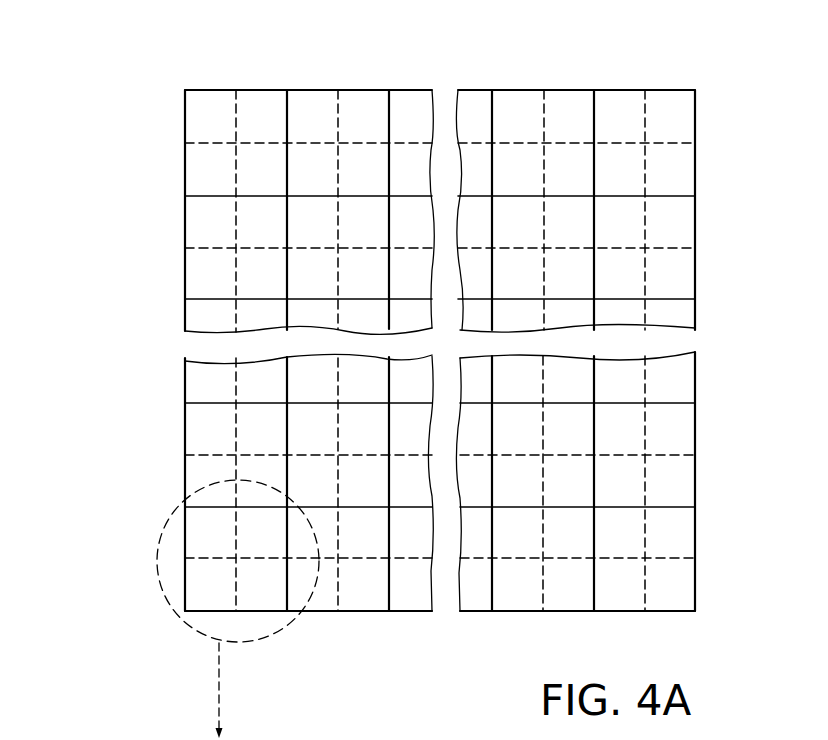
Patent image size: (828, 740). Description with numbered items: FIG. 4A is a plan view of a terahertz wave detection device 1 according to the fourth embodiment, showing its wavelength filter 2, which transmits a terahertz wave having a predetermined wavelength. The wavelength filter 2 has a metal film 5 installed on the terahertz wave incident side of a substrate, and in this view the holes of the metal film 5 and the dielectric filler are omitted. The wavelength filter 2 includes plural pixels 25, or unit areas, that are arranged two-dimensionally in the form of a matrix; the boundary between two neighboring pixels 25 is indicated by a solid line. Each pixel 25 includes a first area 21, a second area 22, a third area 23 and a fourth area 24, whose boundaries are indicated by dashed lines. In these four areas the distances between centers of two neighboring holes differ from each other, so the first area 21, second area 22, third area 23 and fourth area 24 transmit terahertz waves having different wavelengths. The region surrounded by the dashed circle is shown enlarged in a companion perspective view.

The terahertz wave detection device 1 is at (634, 67).
The wavelength filter 2 is at (165, 444).
The metal film 5 is at (203, 418).
The first area 21 is at (265, 418).
The second area 22 is at (267, 473).
The third area 23 is at (203, 436).
The fourth area 24 is at (197, 485).
The pixel 25 is at (165, 481).